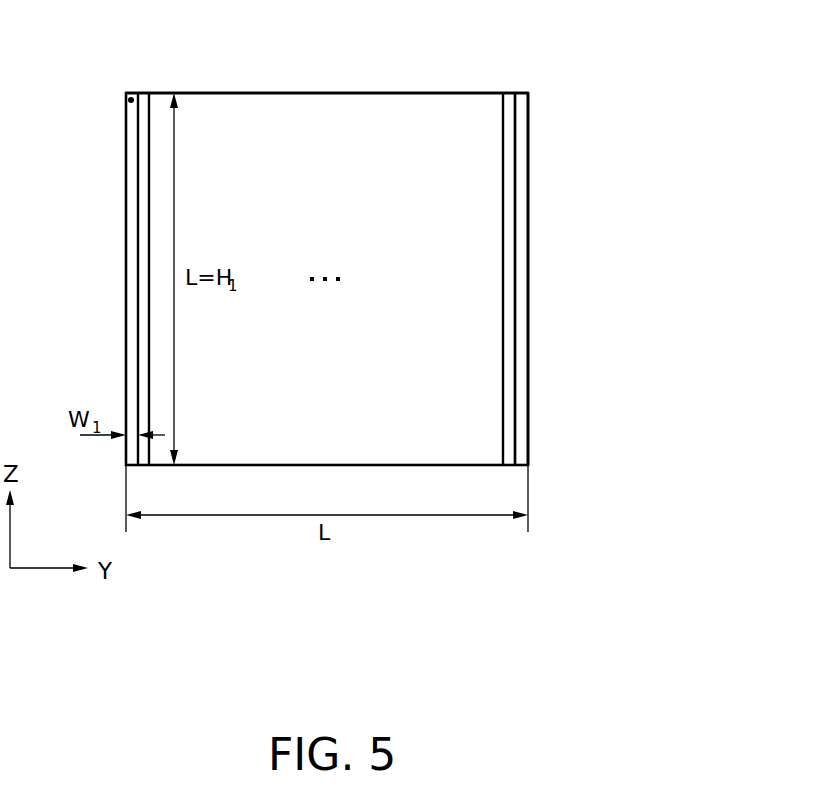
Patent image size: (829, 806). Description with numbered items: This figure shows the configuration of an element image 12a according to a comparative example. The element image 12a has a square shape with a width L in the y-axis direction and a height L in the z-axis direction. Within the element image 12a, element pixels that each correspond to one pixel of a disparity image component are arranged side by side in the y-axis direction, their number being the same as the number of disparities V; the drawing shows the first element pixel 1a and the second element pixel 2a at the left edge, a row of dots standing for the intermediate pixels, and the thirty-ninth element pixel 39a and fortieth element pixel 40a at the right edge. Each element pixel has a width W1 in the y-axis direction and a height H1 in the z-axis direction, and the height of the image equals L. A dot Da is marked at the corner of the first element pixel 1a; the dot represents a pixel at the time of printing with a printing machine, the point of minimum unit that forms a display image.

The first element pixel 1a is at (132, 140).
The second element pixel 2a is at (143, 96).
The dot Da is at (130, 99).
The element image 12a is at (440, 92).
The thirty-ninth element pixel 39a is at (509, 100).
The fortieth element pixel 40a is at (520, 123).